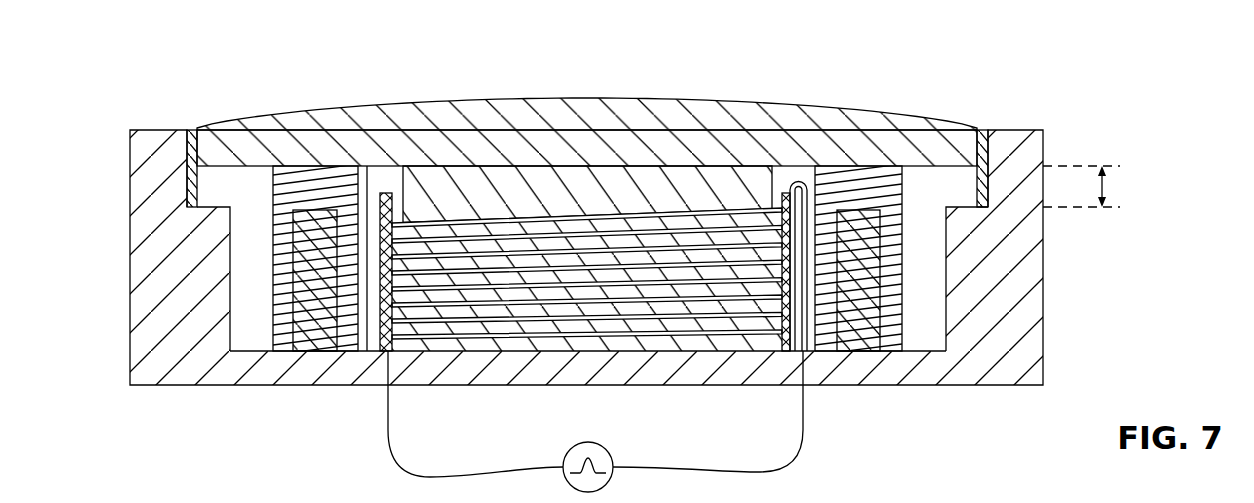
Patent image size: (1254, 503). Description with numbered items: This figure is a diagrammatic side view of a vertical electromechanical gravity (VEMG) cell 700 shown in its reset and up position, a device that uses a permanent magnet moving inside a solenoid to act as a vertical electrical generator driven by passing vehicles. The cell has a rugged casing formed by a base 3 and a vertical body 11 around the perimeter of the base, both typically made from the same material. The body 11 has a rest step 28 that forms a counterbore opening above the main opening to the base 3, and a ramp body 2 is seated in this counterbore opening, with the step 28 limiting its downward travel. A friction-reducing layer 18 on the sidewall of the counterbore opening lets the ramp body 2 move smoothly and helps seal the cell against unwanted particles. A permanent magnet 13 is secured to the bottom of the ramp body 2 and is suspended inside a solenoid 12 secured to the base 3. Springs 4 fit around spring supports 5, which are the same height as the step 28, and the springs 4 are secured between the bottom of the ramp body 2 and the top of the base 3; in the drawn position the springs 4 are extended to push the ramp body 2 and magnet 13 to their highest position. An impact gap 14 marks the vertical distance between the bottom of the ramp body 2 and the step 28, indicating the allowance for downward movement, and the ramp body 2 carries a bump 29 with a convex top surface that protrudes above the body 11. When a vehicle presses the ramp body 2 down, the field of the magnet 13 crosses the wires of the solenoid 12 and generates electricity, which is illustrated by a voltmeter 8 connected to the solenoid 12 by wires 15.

The vertical electromechanical gravity (VEMG) cell 700 is at (1082, 84).
The vertical body 11 is at (131, 262).
The base 3 is at (903, 370).
The rest step 28 is at (208, 205).
The friction-reducing layer 18 is at (192, 131).
The ramp body 2 is at (598, 160).
The bump 29 is at (700, 112).
The permanent magnet 13 is at (428, 190).
The springs 4 is at (297, 185).
The spring supports 5 is at (317, 212).
The solenoid 12 is at (733, 207).
The impact gap 14 is at (1112, 186).
The wires 15 is at (386, 436).
The voltmeter 8 is at (604, 478).